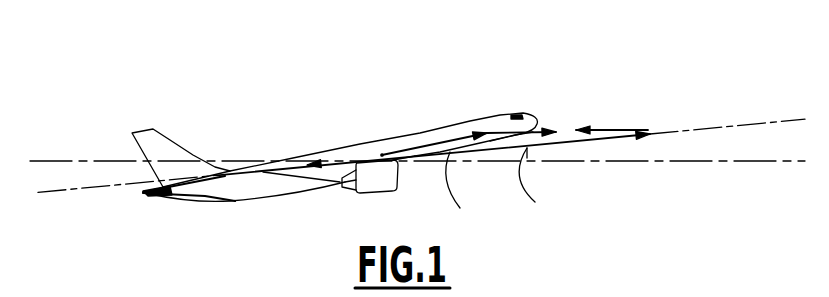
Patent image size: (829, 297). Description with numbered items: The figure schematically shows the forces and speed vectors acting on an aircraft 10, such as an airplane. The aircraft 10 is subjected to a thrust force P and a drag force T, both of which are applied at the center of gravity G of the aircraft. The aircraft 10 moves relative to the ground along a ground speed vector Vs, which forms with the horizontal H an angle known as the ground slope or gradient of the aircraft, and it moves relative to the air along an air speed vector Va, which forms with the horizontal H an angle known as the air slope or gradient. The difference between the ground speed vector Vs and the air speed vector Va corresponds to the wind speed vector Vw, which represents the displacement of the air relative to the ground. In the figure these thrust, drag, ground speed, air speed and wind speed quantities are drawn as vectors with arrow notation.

The aircraft 10 is at (313, 130).
The center of gravity G is at (381, 153).
The thrust force P is at (453, 135).
The drag force T is at (337, 187).
The ground speed vector Vs is at (497, 140).
The wind speed vector Vw is at (597, 130).
The air speed vector Va is at (583, 143).
The horizontal H is at (773, 163).